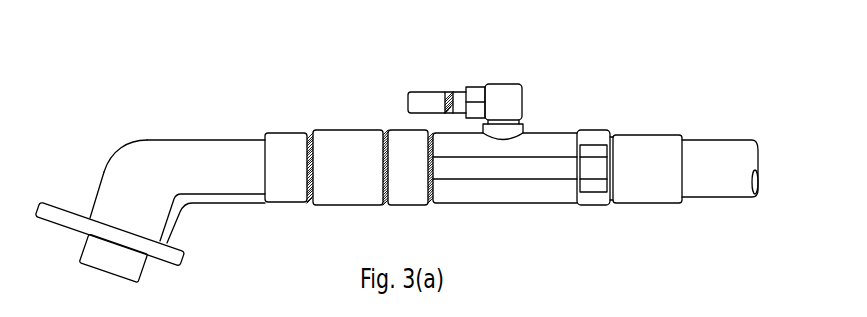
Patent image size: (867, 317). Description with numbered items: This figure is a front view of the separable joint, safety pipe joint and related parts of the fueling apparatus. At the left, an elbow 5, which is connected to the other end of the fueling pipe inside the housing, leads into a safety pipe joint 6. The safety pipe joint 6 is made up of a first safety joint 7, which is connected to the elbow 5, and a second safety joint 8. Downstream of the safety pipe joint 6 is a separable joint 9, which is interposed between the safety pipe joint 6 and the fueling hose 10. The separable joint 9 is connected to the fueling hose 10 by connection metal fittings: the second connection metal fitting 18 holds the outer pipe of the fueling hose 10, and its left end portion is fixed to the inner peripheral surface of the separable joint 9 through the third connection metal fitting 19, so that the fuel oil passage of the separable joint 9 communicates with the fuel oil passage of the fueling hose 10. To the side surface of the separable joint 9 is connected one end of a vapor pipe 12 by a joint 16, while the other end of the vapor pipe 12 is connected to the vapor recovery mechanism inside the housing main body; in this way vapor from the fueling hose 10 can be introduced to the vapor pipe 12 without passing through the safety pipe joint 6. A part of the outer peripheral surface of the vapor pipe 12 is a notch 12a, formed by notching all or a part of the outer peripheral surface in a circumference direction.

The elbow 5 is at (180, 140).
The safety pipe joint 6 is at (373, 121).
The first safety joint 7 is at (338, 130).
The second safety joint 8 is at (405, 138).
The separable joint 9 is at (560, 132).
The fueling hose 10 is at (712, 140).
The vapor pipe 12 is at (443, 71).
The notch 12a is at (450, 92).
The joint 16 is at (502, 84).
The second connection metal fitting 18 is at (647, 135).
The third connection metal fitting 19 is at (593, 130).